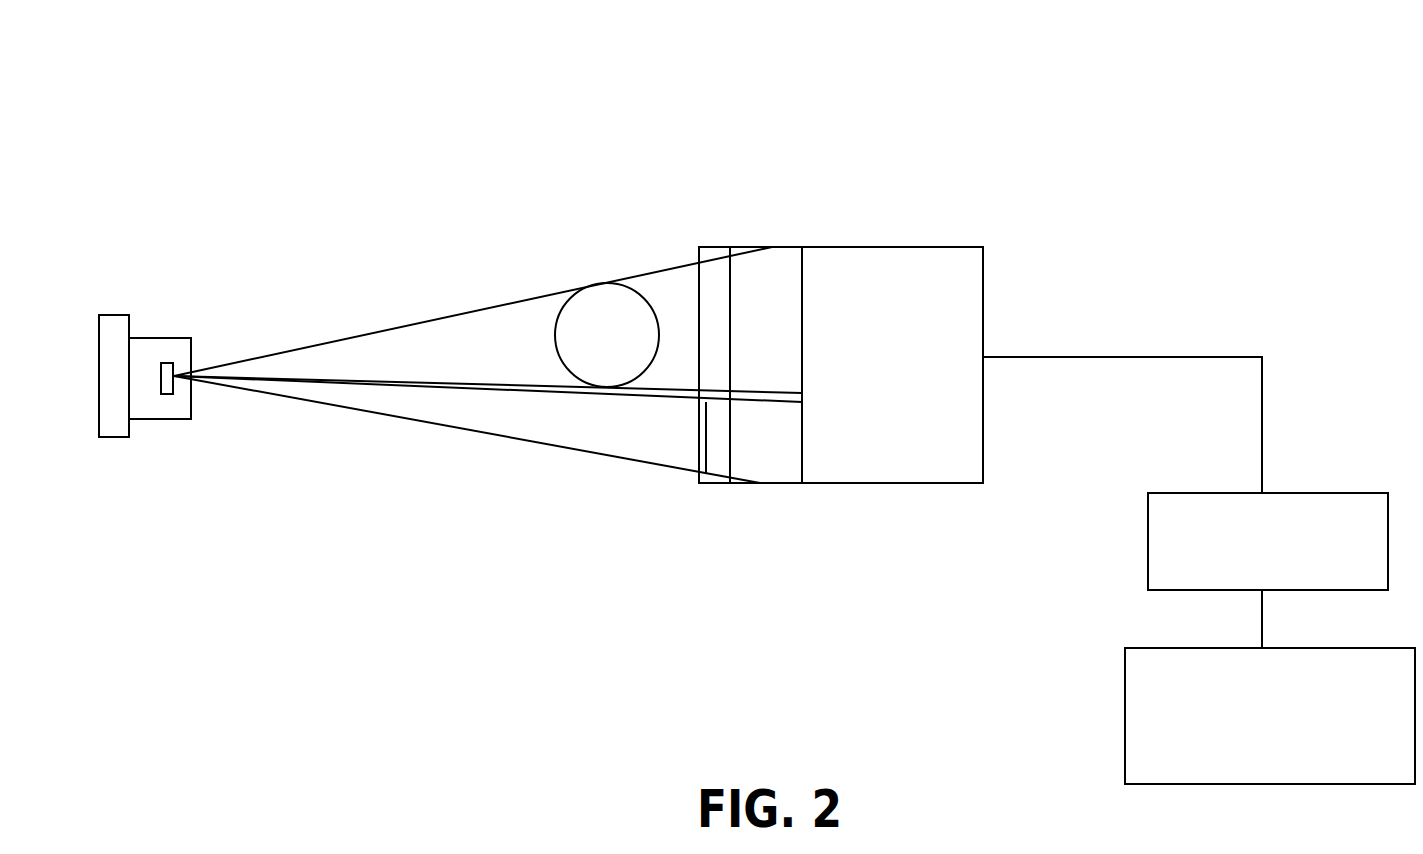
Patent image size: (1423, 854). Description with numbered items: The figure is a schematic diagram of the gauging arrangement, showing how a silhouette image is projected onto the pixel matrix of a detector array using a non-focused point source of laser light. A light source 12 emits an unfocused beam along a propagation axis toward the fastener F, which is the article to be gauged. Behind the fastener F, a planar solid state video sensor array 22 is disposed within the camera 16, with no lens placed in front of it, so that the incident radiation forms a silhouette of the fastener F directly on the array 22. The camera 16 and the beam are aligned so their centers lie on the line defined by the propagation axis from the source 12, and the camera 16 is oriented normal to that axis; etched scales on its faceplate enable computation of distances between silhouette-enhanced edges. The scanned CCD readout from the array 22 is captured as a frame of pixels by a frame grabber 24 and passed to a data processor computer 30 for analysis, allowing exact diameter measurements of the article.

The light source 12 is at (153, 338).
The fastener F is at (607, 302).
The video sensor array 22 is at (714, 247).
The camera 16 is at (883, 247).
The frame grabber 24 is at (1148, 541).
The data processor 30 is at (1125, 733).